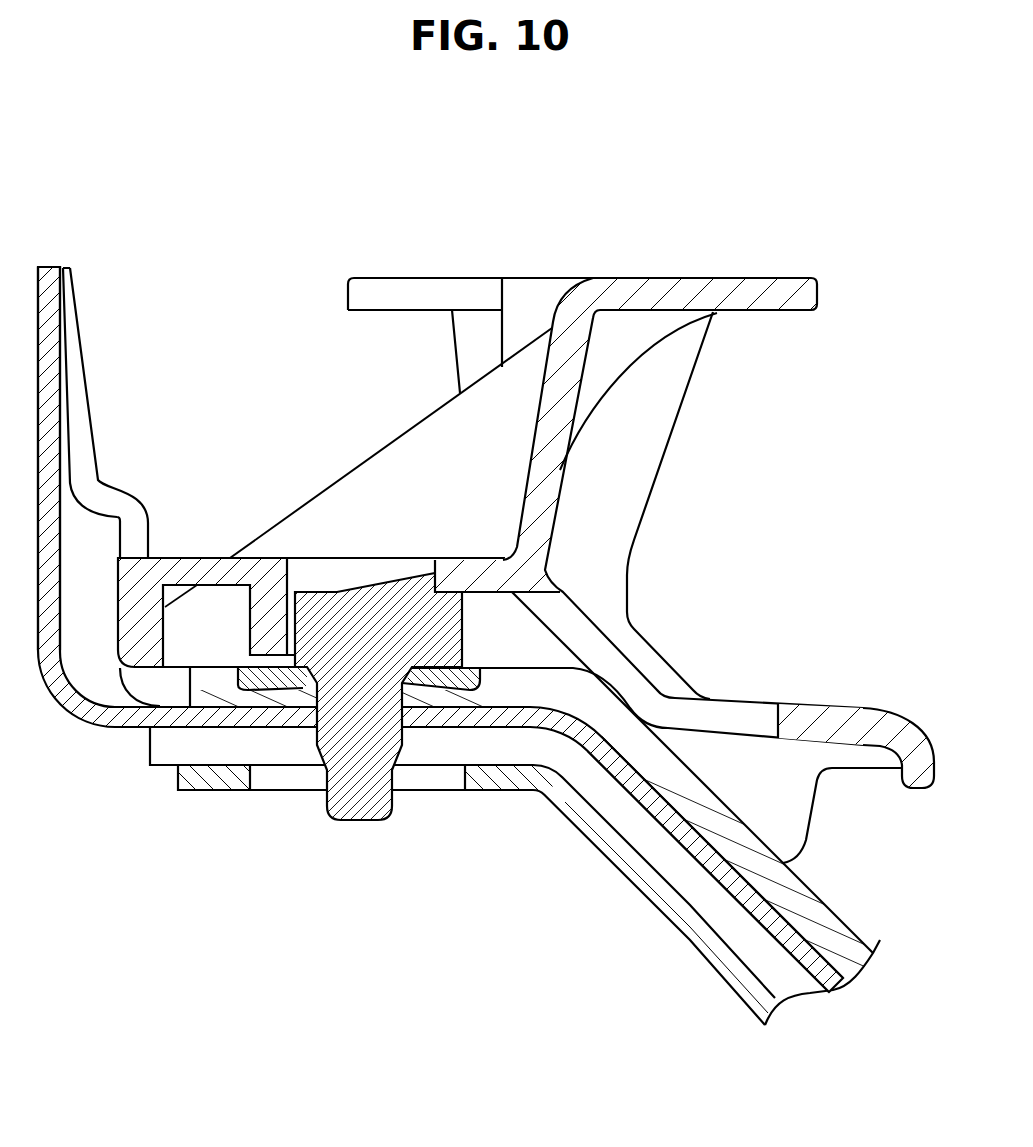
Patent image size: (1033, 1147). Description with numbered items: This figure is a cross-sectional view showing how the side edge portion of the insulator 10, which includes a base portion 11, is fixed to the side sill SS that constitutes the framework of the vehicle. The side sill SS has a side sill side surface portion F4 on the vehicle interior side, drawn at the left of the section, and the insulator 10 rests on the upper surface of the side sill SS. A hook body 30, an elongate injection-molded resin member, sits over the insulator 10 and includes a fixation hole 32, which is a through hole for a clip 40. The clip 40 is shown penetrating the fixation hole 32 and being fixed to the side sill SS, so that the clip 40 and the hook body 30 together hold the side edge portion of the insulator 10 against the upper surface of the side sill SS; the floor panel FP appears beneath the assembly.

The insulator 10 is at (853, 967).
The base portion 11 is at (857, 1040).
The hook body 30 is at (718, 290).
The fixation hole 32 is at (404, 570).
The clip 40 is at (367, 810).
The side sill side surface portion F4 is at (213, 258).
The floor panel FP is at (95, 713).
The side sill SS is at (225, 745).